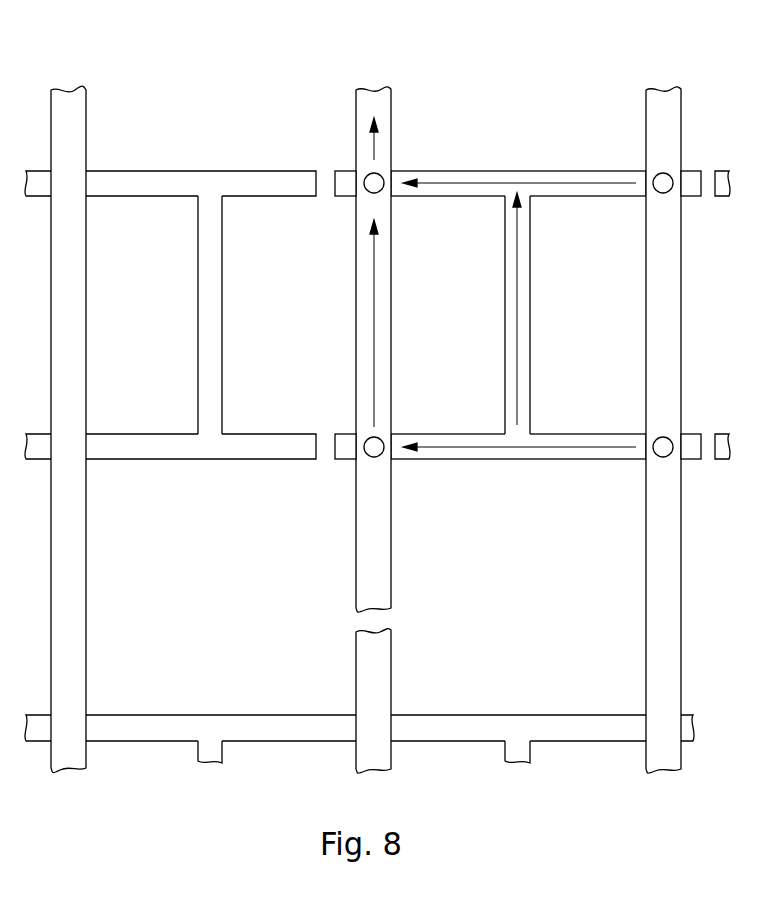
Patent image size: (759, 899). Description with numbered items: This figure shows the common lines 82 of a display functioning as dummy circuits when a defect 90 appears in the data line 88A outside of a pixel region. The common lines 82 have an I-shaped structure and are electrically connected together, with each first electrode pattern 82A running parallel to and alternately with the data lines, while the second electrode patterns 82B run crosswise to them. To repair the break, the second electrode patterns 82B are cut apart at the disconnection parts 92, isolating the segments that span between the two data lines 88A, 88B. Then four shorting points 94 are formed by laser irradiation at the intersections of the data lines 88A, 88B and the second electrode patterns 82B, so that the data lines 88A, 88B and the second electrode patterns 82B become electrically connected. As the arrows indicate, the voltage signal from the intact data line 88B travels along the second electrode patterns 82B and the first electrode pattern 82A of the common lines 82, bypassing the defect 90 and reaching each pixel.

The common line 82 is at (442, 160).
The first electrode pattern 82A is at (530, 305).
The second electrode pattern 82B is at (500, 168).
The data line 88A is at (377, 88).
The data line 88B is at (666, 88).
The defect 90 is at (342, 614).
The disconnection part 92 is at (318, 160).
The shorting point 94 is at (382, 191).